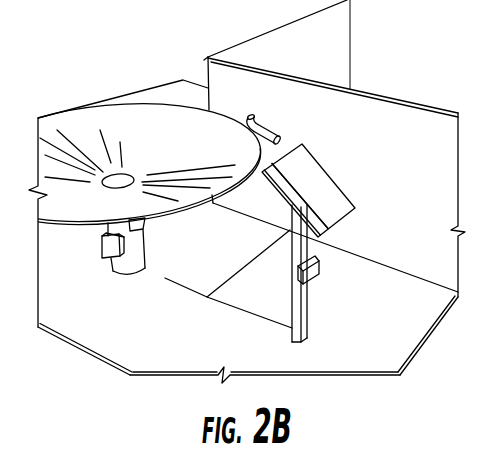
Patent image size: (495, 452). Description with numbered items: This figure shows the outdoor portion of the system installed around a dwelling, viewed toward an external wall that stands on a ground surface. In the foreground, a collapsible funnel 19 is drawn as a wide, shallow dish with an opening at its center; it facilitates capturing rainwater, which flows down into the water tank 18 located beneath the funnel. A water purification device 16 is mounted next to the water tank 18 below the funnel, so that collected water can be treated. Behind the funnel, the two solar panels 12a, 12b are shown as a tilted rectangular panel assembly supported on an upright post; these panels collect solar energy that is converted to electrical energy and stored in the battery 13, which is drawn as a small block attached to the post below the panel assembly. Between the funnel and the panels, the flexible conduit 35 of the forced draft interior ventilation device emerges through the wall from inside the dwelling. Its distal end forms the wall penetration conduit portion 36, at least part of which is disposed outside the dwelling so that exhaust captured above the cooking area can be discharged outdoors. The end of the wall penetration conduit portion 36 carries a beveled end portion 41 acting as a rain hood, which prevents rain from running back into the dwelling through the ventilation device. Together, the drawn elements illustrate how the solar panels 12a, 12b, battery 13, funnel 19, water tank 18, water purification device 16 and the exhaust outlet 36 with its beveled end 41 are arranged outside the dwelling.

The collapsible funnel 19 is at (106, 104).
The water purification device 16 is at (110, 251).
The water tank 18 is at (132, 273).
The flexible conduit 35 is at (252, 117).
The wall penetration conduit portion 36 is at (268, 133).
The beveled end portion 41 is at (283, 138).
The solar panel 12b is at (317, 183).
The solar panel 12a is at (317, 213).
The battery 13 is at (314, 271).